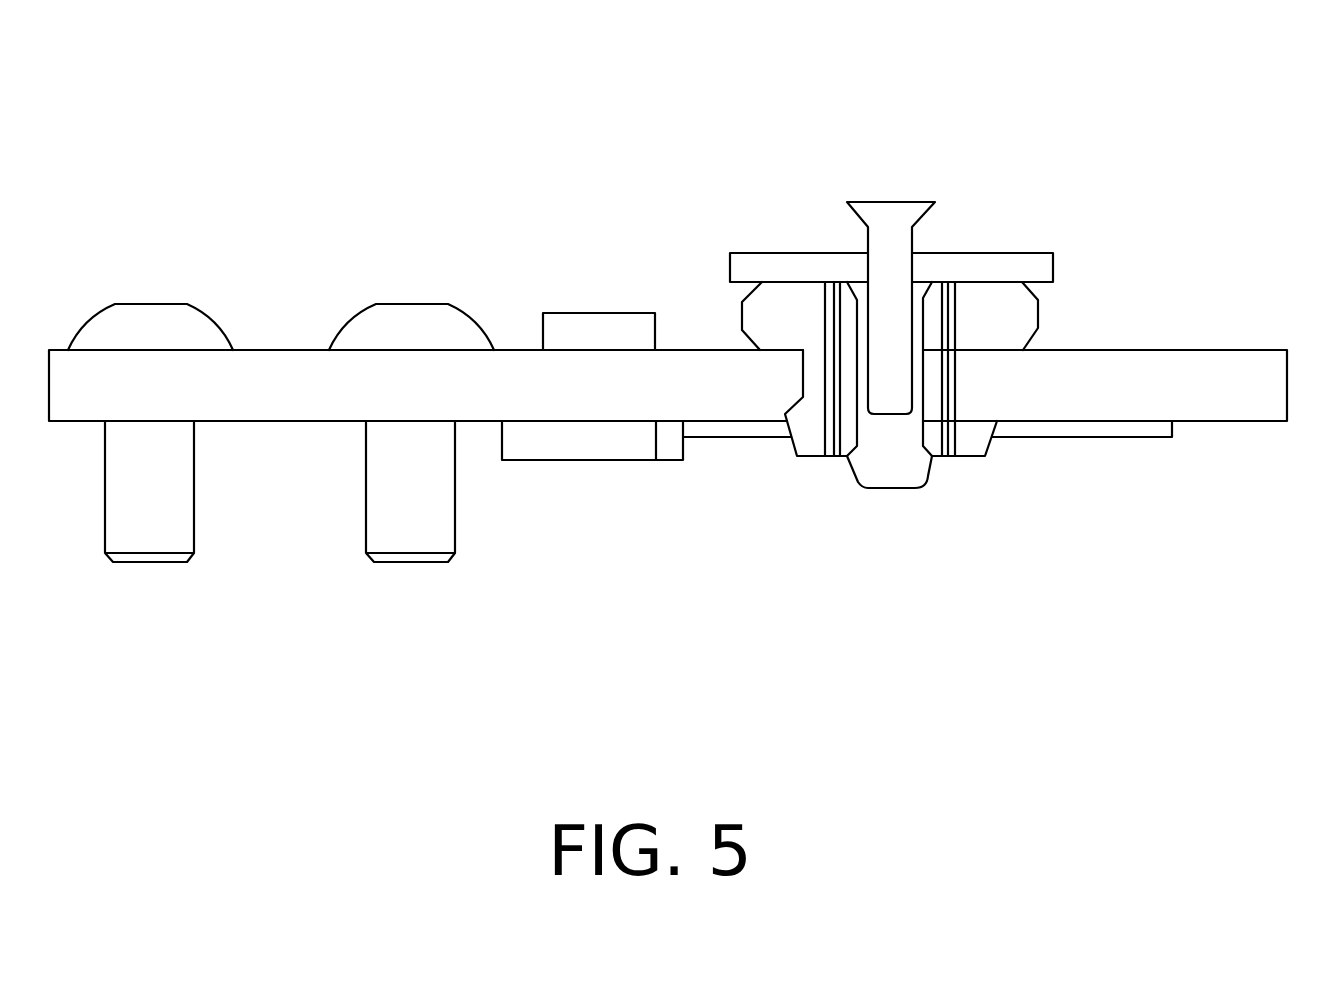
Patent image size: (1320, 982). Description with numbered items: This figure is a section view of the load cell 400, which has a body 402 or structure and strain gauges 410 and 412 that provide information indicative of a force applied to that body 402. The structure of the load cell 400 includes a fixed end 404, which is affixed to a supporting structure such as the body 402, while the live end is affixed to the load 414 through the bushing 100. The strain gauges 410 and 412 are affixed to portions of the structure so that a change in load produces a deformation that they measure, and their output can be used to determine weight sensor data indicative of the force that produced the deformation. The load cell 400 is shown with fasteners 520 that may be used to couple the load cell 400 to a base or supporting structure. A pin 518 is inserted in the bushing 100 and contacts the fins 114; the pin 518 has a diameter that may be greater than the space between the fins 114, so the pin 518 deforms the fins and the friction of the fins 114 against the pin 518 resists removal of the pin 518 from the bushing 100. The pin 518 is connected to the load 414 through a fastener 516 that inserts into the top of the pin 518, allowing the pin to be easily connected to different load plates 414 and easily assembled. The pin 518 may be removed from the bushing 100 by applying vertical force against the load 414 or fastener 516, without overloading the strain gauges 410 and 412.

The load cell 400 is at (135, 119).
The body 402 is at (280, 350).
The fixed end 404 is at (1165, 365).
The strain gauge 410 is at (1162, 437).
The strain gauge 412 is at (607, 327).
The load 414 is at (797, 253).
The fastener 516 is at (880, 201).
The pin 518 is at (883, 470).
The fasteners 520 is at (130, 327).
The bushing 100 is at (1040, 313).
The fins 114 is at (835, 422).